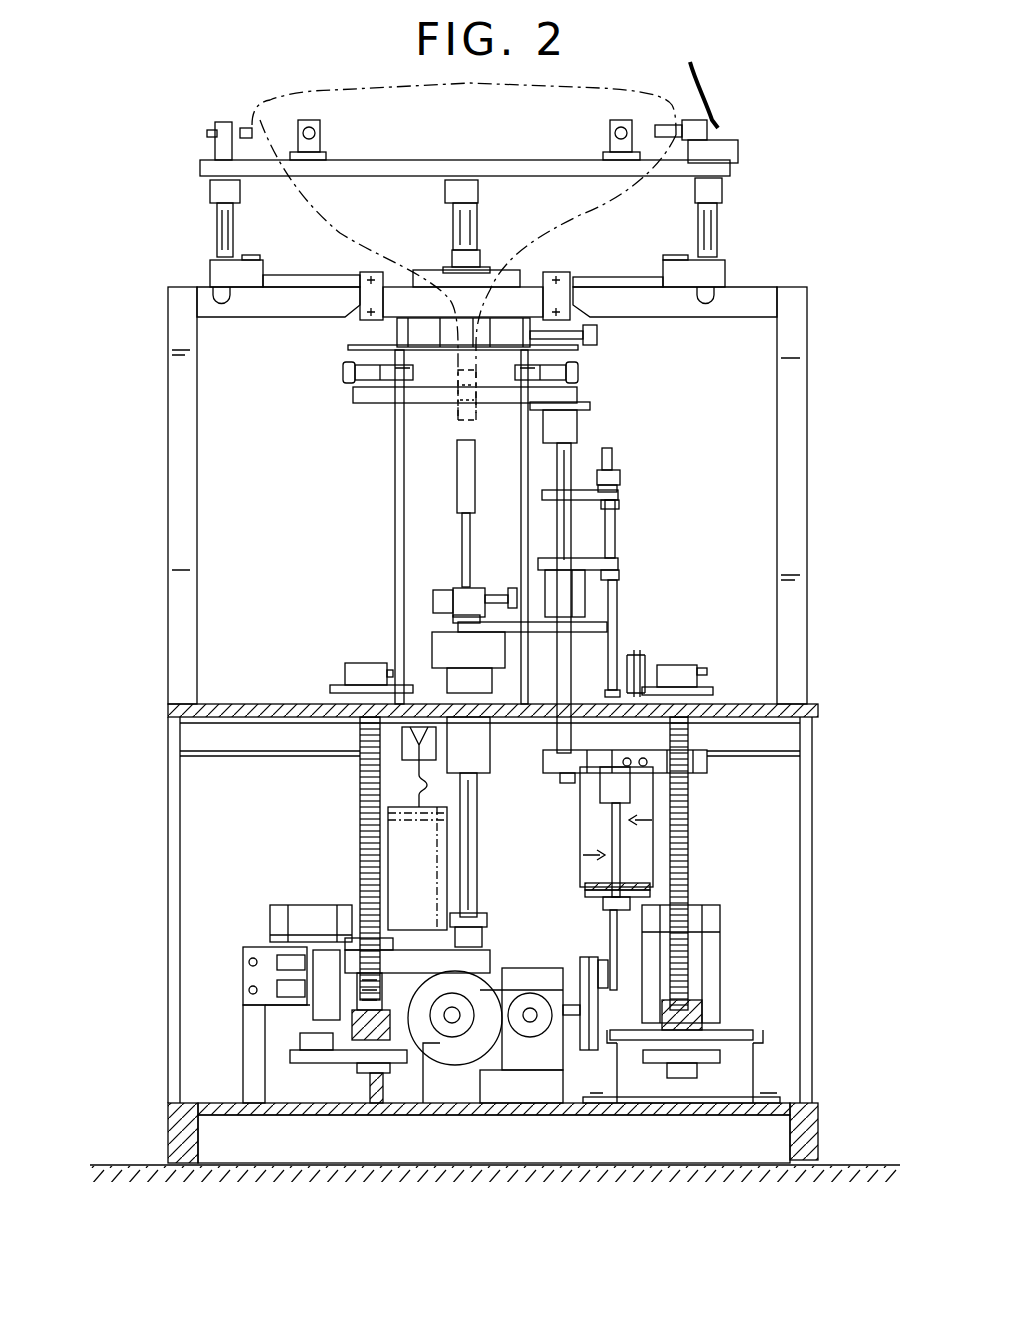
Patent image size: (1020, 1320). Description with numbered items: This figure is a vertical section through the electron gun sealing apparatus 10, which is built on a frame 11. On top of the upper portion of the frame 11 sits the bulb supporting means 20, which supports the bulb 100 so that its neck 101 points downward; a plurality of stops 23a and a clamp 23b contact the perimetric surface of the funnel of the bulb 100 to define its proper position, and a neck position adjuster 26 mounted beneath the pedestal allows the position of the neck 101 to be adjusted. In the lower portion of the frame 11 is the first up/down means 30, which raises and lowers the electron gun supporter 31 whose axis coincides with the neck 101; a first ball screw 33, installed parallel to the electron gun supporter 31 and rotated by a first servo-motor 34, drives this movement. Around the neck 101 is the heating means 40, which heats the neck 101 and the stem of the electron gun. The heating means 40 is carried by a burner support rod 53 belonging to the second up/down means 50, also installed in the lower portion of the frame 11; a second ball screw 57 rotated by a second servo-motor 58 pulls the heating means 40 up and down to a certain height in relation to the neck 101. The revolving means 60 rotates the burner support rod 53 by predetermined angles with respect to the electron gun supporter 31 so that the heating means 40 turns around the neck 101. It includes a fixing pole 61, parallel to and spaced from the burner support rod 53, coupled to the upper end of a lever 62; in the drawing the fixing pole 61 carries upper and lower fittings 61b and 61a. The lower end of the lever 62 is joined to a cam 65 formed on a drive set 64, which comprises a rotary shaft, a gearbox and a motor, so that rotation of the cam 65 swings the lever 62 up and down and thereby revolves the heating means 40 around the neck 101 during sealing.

The apparatus 10 is at (177, 228).
The frame 11 is at (108, 347).
The bulb supporting means 20 is at (740, 190).
The stops 23a is at (215, 118).
The clamp 23b is at (722, 128).
The neck position adjuster 26 is at (605, 342).
The first up/down means 30 is at (275, 847).
The electron gun supporter 31 is at (460, 520).
The first ball screw 33 is at (360, 772).
The first servo-motor 34 is at (280, 908).
The heating means 40 is at (628, 397).
The second up/down means 50 is at (753, 828).
The burner support rod 53 is at (573, 536).
The second ball screw 57 is at (680, 978).
The second servo-motor 58 is at (688, 935).
The revolving means 60 is at (520, 1098).
The fixing pole 61 is at (613, 455).
The lower stopper 61a is at (620, 585).
The upper stopper 61b is at (620, 508).
The lever 62 is at (620, 635).
The drive set 64 is at (522, 965).
The cam 65 is at (588, 957).
The bulb 100 is at (268, 112).
The neck 101 is at (450, 360).